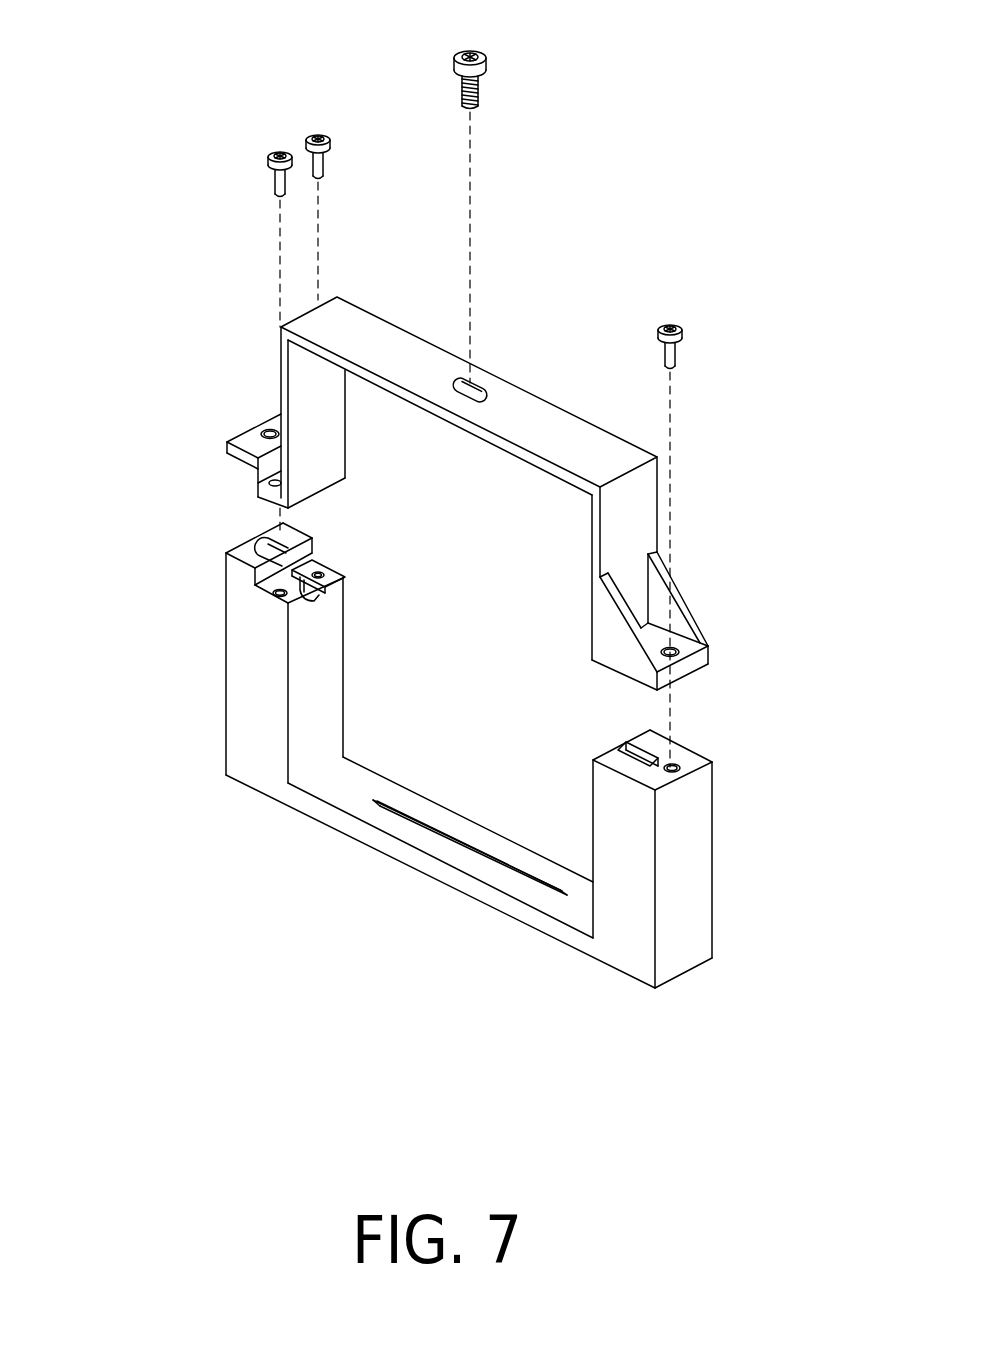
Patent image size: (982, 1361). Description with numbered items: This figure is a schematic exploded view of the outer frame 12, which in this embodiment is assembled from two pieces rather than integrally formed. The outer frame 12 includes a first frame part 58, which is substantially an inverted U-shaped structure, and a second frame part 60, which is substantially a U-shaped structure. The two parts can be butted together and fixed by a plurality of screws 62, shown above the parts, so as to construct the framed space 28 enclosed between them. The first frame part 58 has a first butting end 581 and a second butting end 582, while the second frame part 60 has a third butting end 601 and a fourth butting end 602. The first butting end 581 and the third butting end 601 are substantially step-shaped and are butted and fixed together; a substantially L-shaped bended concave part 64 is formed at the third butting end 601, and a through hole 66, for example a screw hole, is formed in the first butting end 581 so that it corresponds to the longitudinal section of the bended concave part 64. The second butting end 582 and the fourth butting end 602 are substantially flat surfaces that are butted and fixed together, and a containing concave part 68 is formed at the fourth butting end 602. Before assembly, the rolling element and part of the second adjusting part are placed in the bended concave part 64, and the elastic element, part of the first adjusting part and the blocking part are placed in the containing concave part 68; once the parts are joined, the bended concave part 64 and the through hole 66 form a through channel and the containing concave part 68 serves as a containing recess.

The outer frame 12 is at (753, 623).
The framed space 28 is at (420, 718).
The first frame part 58 is at (533, 355).
The second frame part 60 is at (448, 906).
The screws 62 is at (320, 162).
The bended concave part 64 is at (289, 563).
The through hole 66 is at (270, 430).
The containing concave part 68 is at (700, 772).
The first butting end 581 is at (247, 474).
The second butting end 582 is at (693, 683).
The third butting end 601 is at (248, 556).
The fourth butting end 602 is at (700, 762).